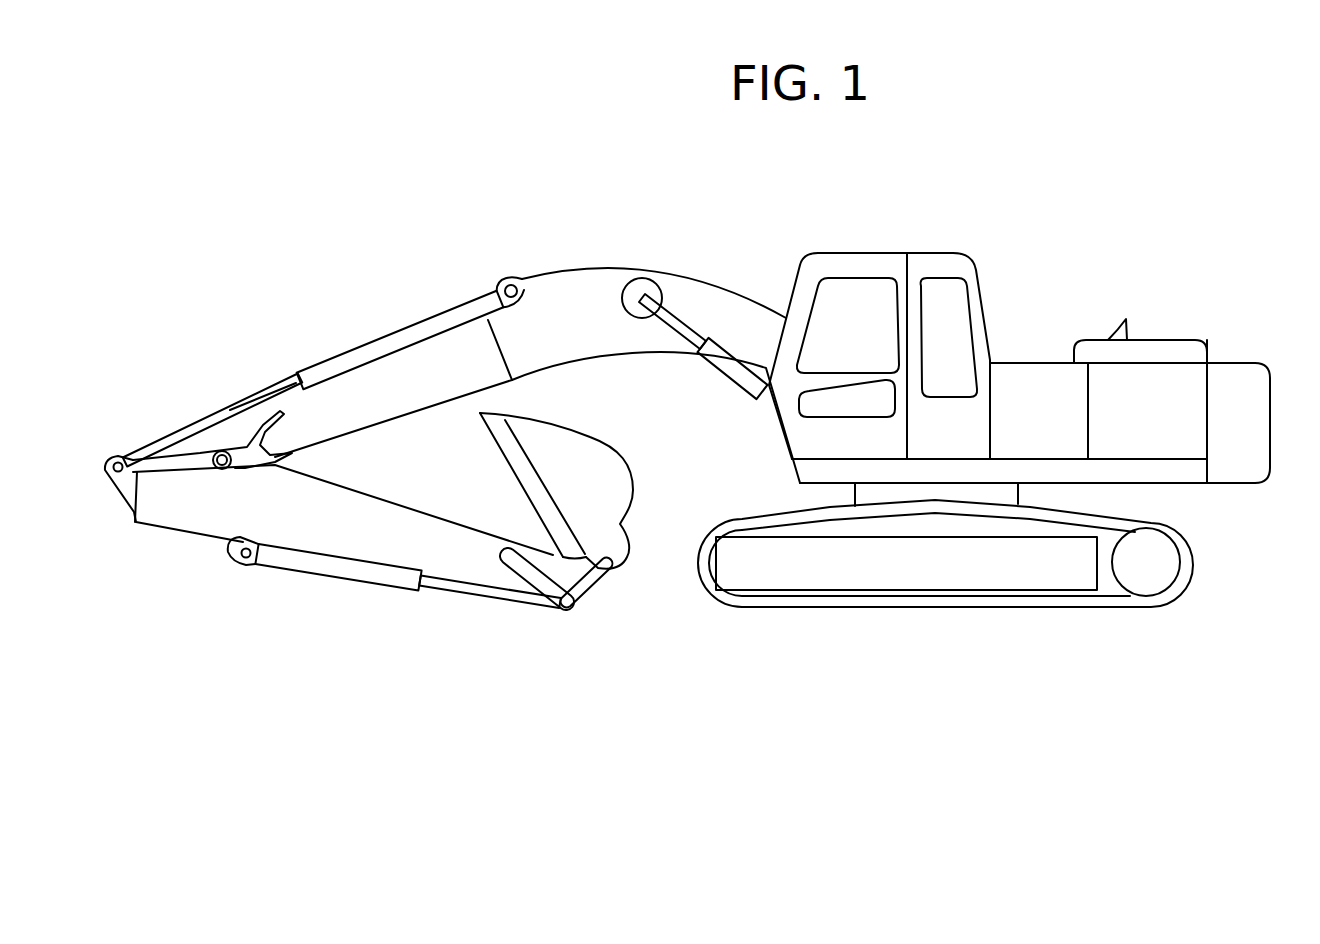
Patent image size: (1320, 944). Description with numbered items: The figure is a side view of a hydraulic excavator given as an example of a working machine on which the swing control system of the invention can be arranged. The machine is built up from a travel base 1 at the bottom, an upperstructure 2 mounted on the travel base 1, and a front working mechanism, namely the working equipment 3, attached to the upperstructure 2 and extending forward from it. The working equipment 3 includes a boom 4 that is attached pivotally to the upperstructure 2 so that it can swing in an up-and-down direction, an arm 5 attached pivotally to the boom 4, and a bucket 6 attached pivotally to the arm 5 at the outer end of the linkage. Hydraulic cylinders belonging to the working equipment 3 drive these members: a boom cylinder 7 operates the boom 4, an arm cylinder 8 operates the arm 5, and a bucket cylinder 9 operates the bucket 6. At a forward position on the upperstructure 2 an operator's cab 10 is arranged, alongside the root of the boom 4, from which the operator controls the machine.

The travel base 1 is at (932, 608).
The upperstructure 2 is at (1030, 362).
The working equipment 3 is at (608, 262).
The boom 4 is at (590, 362).
The arm 5 is at (340, 538).
The bucket 6 is at (628, 463).
The boom cylinder 7 is at (738, 362).
The arm cylinder 8 is at (410, 322).
The bucket cylinder 9 is at (388, 585).
The operator's cab 10 is at (882, 255).